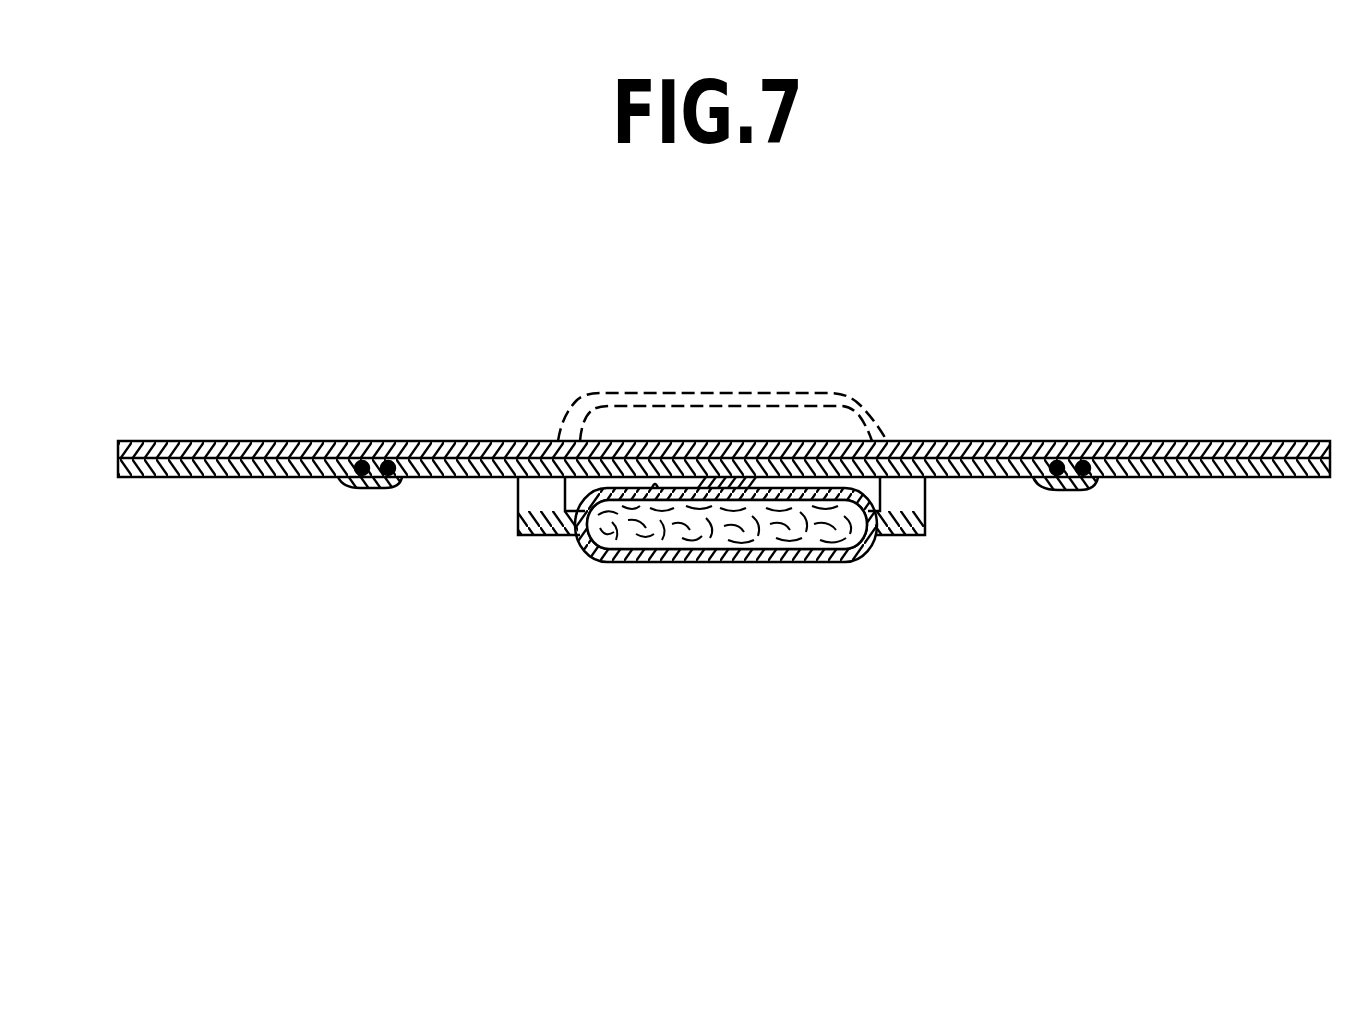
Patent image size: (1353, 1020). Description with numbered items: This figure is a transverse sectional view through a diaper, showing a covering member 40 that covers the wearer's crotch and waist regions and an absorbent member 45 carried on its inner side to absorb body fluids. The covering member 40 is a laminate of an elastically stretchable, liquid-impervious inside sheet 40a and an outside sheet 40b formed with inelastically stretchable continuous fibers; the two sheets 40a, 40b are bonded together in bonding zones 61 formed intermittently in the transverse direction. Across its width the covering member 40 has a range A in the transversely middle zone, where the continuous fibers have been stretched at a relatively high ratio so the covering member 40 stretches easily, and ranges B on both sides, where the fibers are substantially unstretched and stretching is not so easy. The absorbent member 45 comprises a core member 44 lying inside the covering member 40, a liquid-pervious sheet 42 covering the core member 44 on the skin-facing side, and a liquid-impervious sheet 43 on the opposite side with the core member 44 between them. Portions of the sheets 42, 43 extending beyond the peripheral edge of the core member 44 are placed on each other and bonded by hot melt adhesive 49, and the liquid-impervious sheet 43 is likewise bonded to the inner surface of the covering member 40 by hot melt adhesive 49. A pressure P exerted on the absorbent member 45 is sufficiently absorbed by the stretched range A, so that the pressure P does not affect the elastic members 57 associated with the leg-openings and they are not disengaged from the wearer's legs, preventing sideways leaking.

The covering member 40 is at (732, 390).
The inside sheet 40a is at (432, 441).
The outside sheet 40b is at (494, 441).
The liquid-pervious sheet 42 is at (620, 553).
The liquid-impervious sheet 43 is at (657, 487).
The core member 44 is at (793, 537).
The absorbent member 45 is at (840, 392).
The hot melt adhesive 49 is at (730, 467).
The elastic member associated with leg-opening 57 is at (1071, 465).
The bonding zone 61 is at (357, 441).
The range A is at (457, 311).
The range B is at (118, 310).
The pressure P is at (723, 668).